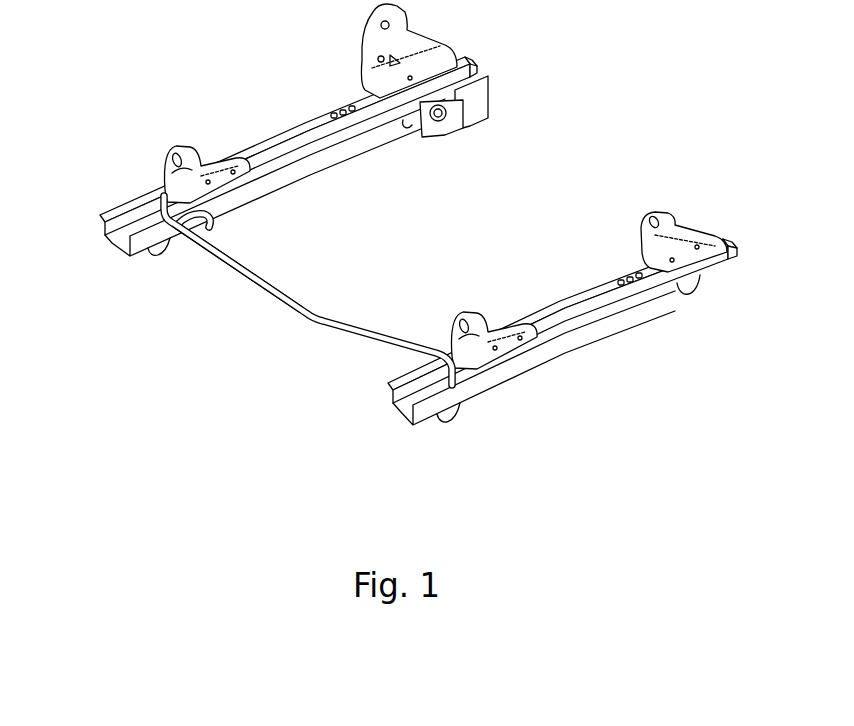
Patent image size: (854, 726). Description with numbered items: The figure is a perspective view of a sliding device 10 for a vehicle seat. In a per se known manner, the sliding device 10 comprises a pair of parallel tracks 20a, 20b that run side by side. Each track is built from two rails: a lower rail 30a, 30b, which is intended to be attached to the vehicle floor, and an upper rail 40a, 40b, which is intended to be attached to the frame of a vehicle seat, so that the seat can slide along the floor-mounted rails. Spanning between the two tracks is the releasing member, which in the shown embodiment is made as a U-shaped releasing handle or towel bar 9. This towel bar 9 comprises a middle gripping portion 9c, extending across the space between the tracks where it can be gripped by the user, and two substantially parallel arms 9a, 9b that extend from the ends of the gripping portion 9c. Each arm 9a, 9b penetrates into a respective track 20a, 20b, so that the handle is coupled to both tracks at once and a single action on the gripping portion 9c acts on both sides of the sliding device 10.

The sliding device 10 is at (397, 252).
The track 20a is at (267, 208).
The track 20b is at (562, 370).
The lower rail 30a is at (118, 208).
The lower rail 30b is at (405, 428).
The upper rail 40a is at (298, 126).
The upper rail 40b is at (590, 291).
The releasing handle 9 is at (308, 290).
The arm 9a is at (197, 165).
The arm 9b is at (402, 358).
The middle gripping portion 9c is at (262, 292).